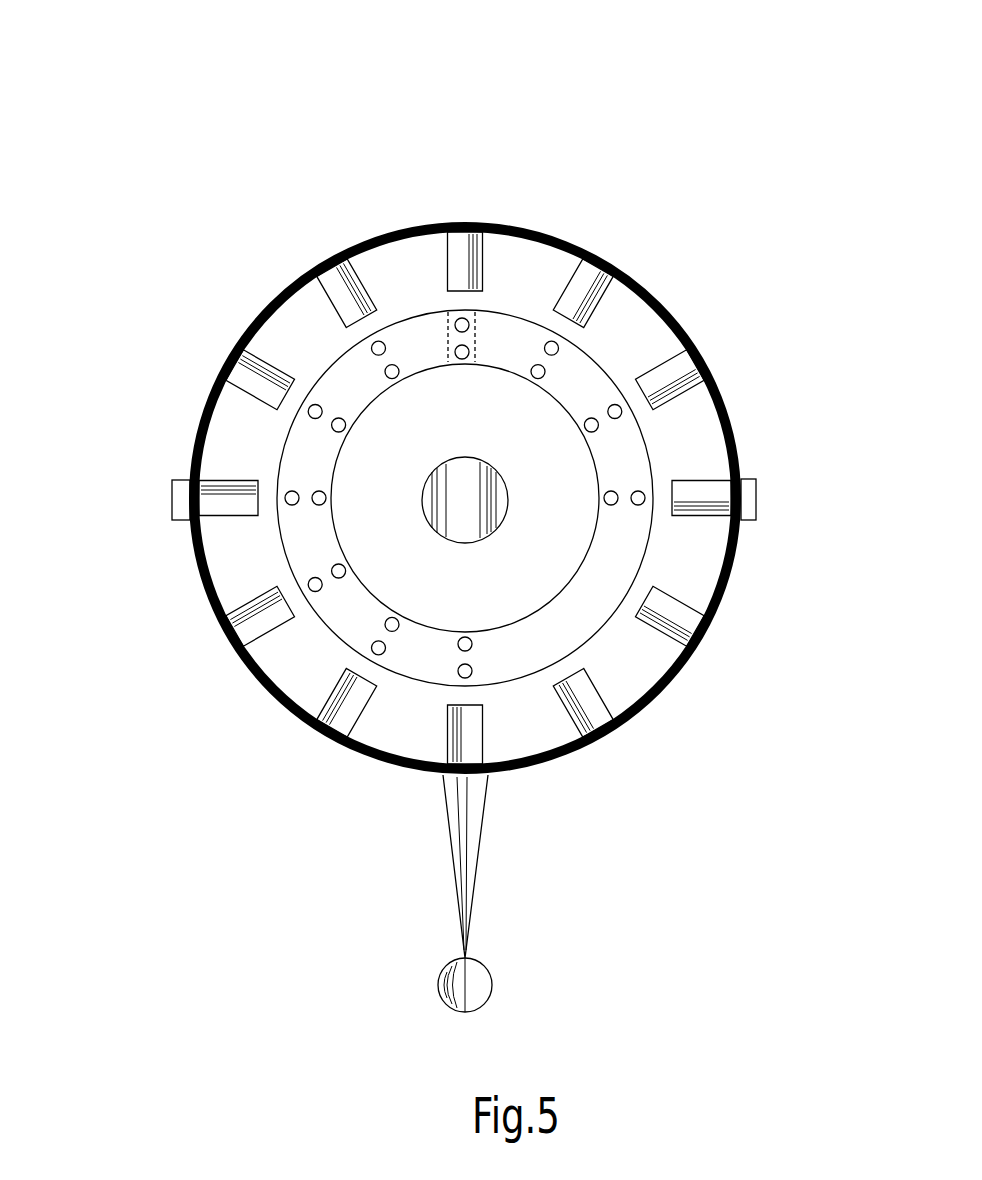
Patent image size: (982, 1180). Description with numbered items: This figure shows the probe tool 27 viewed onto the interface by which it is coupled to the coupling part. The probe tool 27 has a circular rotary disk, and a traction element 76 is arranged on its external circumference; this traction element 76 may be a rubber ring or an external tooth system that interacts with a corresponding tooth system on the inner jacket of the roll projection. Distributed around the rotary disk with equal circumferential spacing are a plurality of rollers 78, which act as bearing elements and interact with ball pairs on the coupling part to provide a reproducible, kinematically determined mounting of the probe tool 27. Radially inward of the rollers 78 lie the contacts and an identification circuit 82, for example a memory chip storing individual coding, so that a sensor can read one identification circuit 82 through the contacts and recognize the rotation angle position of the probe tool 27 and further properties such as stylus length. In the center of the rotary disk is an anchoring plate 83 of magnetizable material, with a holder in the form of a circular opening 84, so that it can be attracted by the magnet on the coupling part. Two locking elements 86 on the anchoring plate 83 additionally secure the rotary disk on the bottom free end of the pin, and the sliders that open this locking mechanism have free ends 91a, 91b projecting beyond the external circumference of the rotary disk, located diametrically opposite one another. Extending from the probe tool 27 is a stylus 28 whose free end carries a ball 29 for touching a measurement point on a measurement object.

The probe tool 27 is at (288, 870).
The stylus 28 is at (480, 887).
The ball 29 is at (493, 985).
The traction element 76 is at (367, 242).
The roller 78 is at (566, 268).
The identification circuit 82 is at (476, 337).
The anchoring plate 83 is at (558, 475).
The circular opening 84 is at (433, 533).
The locking element 86 is at (430, 505).
The free end of slider 91a is at (172, 497).
The free end of slider 91b is at (756, 497).